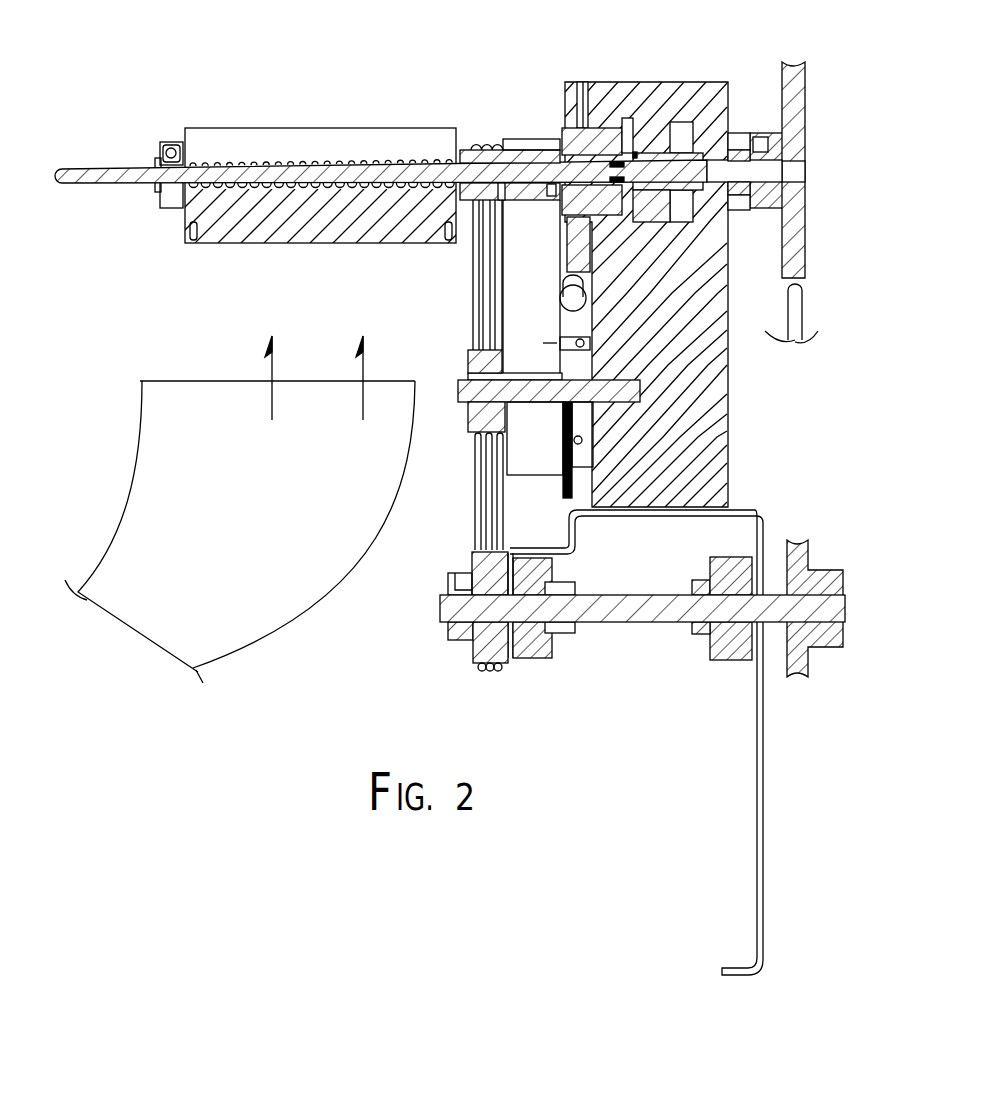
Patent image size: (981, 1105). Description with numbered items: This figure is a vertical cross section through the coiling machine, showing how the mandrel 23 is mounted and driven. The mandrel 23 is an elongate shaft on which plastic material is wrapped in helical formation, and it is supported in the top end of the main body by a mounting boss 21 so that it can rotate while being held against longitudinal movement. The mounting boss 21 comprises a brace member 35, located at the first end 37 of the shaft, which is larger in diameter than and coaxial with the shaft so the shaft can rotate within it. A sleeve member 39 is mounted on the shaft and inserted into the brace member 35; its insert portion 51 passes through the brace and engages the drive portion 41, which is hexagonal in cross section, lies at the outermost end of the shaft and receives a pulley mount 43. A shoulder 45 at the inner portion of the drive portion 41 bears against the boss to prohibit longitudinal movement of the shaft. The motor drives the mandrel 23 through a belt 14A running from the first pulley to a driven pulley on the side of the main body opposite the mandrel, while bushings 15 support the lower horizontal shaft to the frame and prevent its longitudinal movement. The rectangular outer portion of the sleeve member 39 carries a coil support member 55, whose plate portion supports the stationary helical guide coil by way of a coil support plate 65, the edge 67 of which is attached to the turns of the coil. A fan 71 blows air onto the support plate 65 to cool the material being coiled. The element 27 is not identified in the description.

The belt 14A is at (805, 323).
The bushings 15 is at (528, 648).
The mounting boss 21 is at (552, 120).
The mandrel 23 is at (258, 186).
The pulley 27 is at (804, 553).
The brace member 35 is at (596, 133).
The first end 37 is at (692, 100).
The sleeve member 39 is at (520, 148).
The drive portion 41 is at (707, 166).
The pulley mount 43 is at (758, 192).
The shoulder 45 is at (638, 151).
The insert portion 51 is at (612, 212).
The coil support member 55 is at (440, 212).
The coil support plate 65 is at (333, 245).
The edge 67 is at (188, 212).
The fan 71 is at (297, 597).